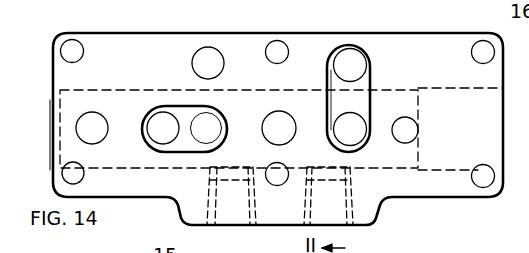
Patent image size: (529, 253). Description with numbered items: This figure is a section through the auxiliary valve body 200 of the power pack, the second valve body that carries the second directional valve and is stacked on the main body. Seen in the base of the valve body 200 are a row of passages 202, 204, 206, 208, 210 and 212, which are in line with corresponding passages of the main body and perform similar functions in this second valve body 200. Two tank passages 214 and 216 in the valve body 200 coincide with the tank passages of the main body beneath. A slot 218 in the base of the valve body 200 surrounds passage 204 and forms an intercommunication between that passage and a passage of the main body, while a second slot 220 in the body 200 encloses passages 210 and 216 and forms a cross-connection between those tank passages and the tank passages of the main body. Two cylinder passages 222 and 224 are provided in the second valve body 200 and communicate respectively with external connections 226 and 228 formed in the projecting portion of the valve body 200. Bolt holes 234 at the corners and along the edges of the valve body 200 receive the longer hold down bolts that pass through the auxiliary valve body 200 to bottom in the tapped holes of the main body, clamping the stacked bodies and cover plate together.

The auxiliary valve body 200 is at (340, 33).
The passage 202 is at (105, 133).
The passage 204 is at (152, 114).
The passage 206 is at (215, 116).
The passage 208 is at (290, 138).
The passage 210 is at (364, 139).
The passage 212 is at (445, 126).
The tank passage 214 is at (198, 56).
The tank passage 216 is at (366, 64).
The slot 218 is at (183, 106).
The slot 220 is at (364, 105).
The cylinder passage 222 is at (214, 172).
The cylinder passage 224 is at (343, 172).
The external connection 226 is at (227, 225).
The external connection 228 is at (333, 225).
The bolt holes 234 is at (83, 53).